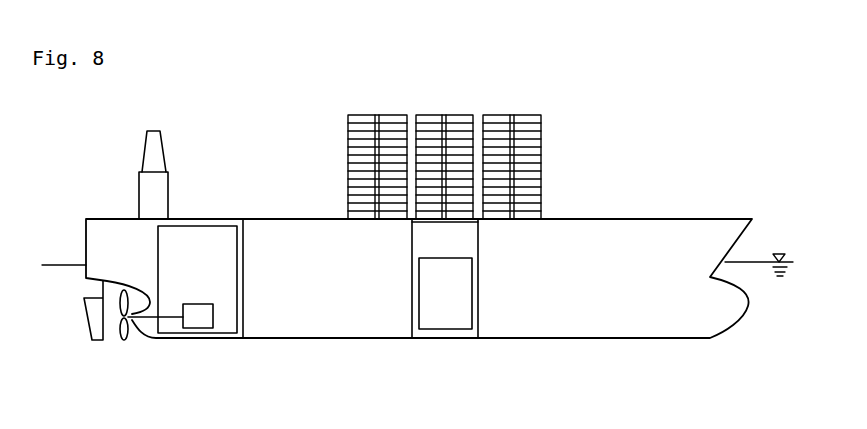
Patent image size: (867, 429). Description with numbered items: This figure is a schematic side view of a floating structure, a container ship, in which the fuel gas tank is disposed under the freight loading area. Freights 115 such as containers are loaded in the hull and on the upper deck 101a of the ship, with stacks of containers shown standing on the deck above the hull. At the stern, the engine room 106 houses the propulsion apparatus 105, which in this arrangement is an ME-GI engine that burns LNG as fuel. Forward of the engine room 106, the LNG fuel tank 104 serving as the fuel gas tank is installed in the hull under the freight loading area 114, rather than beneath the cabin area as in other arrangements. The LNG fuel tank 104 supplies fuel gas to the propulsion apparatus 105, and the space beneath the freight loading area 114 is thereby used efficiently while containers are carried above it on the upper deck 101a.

The upper deck 101a is at (682, 217).
The LNG fuel tank 104 is at (443, 328).
The propulsion apparatus 105 is at (195, 328).
The engine room 106 is at (205, 235).
The freight loading area 114 is at (593, 191).
The freights 115 is at (348, 152).